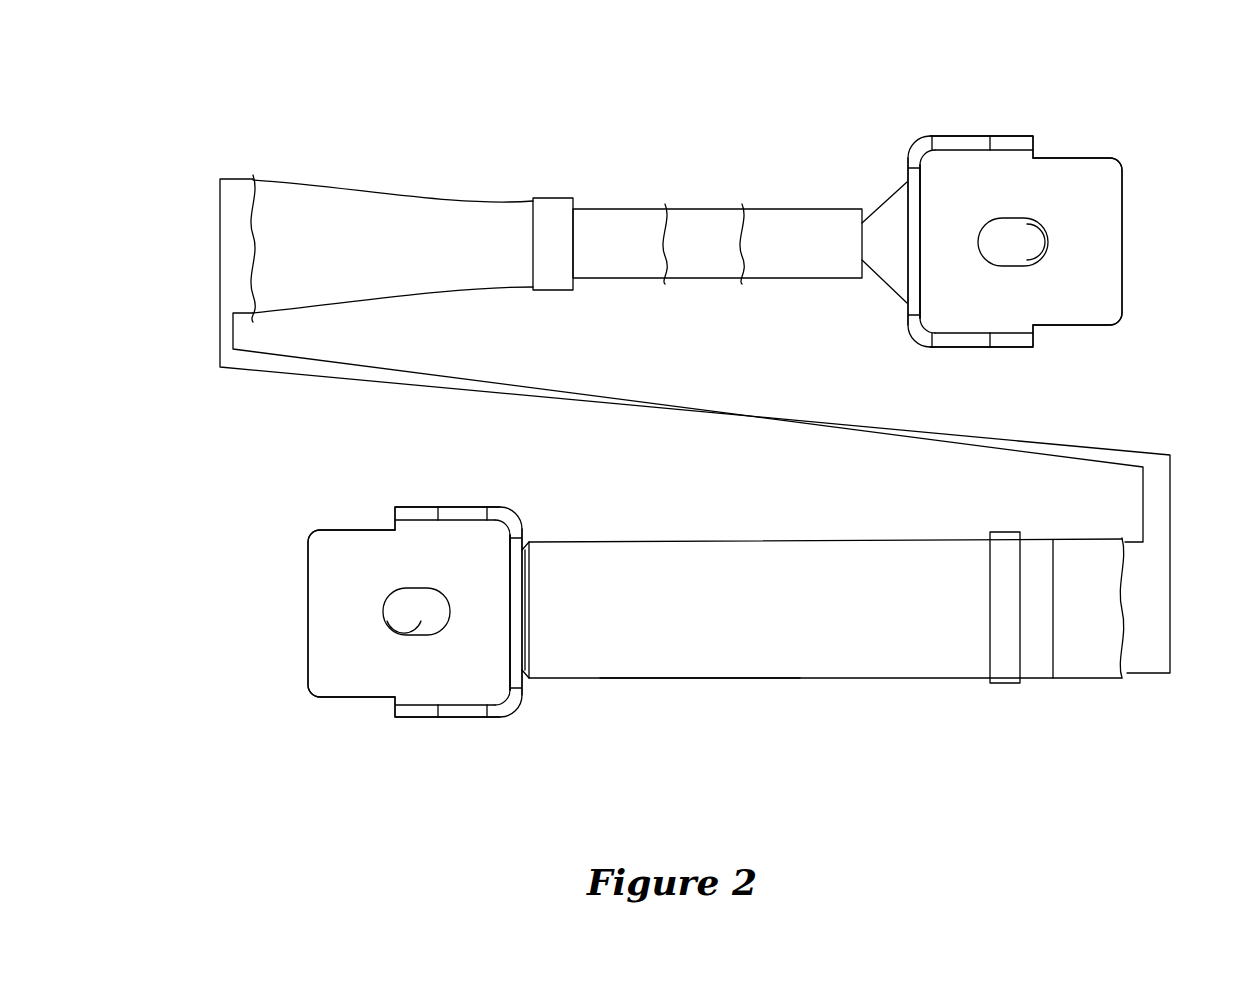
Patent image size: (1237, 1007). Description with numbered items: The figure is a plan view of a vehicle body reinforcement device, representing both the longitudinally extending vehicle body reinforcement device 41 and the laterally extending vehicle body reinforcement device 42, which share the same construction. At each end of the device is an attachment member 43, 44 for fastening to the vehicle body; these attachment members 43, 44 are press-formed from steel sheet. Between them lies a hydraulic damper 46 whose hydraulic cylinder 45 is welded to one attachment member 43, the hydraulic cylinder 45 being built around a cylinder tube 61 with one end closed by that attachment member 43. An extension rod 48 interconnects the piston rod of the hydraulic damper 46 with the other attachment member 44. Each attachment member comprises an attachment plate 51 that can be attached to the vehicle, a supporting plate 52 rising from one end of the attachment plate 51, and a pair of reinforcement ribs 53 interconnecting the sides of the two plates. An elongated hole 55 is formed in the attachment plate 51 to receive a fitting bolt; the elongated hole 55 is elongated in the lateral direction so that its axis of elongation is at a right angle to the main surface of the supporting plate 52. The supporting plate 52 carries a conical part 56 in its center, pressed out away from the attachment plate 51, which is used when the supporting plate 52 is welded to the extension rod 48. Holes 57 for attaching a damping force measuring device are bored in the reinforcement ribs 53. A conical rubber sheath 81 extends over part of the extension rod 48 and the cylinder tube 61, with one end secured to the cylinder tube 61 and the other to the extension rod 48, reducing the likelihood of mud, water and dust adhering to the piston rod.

The longitudinally extending vehicle body reinforcement device 41 is at (695, 360).
The laterally extending vehicle body reinforcement device 42 is at (415, 158).
The attachment member 43 is at (307, 663).
The attachment member 44 is at (1128, 295).
The hydraulic cylinder 45 is at (823, 659).
The cylinder tube 61 is at (607, 663).
The hydraulic damper 46 is at (688, 690).
The extension rod 48 is at (770, 280).
The attachment plate 51 is at (1103, 220).
The supporting plate 52 is at (905, 305).
The reinforcement ribs 53 is at (1007, 142).
The elongated hole 55 is at (1032, 260).
The conical part 56 is at (893, 220).
The holes 57 is at (958, 148).
The rubber sheath 81 is at (1073, 684).